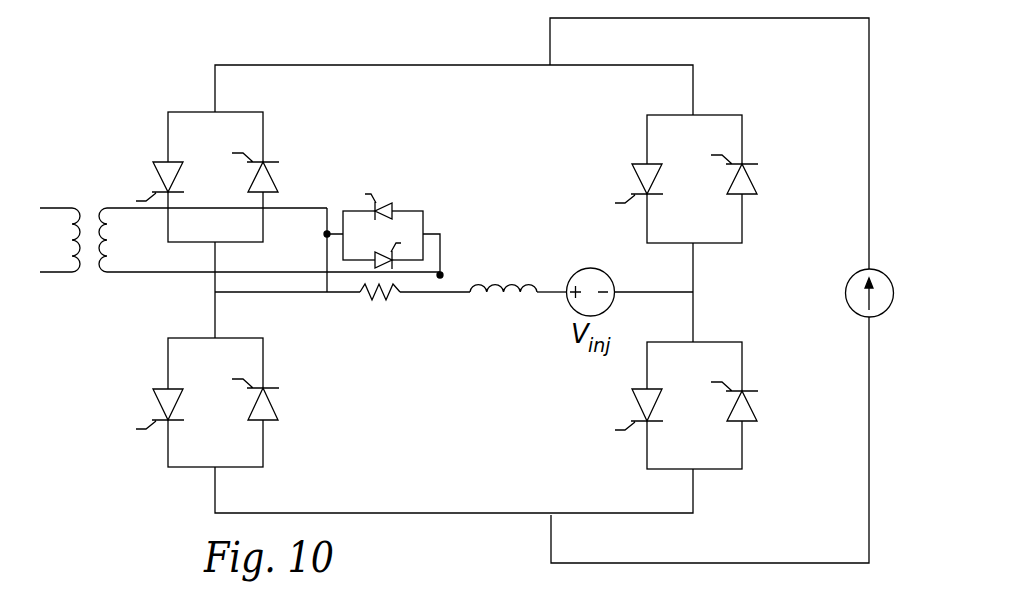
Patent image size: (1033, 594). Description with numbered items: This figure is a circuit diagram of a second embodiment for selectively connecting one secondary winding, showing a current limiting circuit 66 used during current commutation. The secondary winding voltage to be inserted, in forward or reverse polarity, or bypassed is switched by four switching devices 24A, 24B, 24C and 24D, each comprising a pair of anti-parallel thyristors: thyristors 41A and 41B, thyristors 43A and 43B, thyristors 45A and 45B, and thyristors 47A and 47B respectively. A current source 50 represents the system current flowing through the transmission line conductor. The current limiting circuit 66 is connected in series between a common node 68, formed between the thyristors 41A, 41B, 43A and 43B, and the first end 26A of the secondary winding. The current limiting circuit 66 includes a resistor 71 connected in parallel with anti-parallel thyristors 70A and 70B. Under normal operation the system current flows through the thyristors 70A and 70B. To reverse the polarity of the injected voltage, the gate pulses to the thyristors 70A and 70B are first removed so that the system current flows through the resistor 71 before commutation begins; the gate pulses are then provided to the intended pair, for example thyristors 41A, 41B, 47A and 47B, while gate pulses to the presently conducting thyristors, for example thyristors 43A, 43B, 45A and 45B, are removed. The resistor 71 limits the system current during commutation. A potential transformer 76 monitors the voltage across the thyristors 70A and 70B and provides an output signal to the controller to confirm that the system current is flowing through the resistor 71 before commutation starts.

The switching device 24A is at (226, 166).
The switching device 24B is at (240, 402).
The switching device 24C is at (710, 165).
The switching device 24D is at (698, 396).
The thyristor 41A is at (167, 158).
The thyristor 41B is at (277, 167).
The thyristor 43A is at (167, 386).
The thyristor 43B is at (273, 421).
The thyristor 45A is at (646, 160).
The thyristor 45B is at (757, 180).
The thyristor 47A is at (632, 388).
The thyristor 47B is at (748, 424).
The current limiting circuit 66 is at (414, 185).
The thyristor 70A is at (386, 204).
The thyristor 70B is at (378, 254).
The common node 68 is at (215, 292).
The resistor 71 is at (400, 296).
The first end of the secondary winding 26A is at (458, 294).
The current source 50 is at (876, 270).
The potential transformer 76 is at (60, 207).